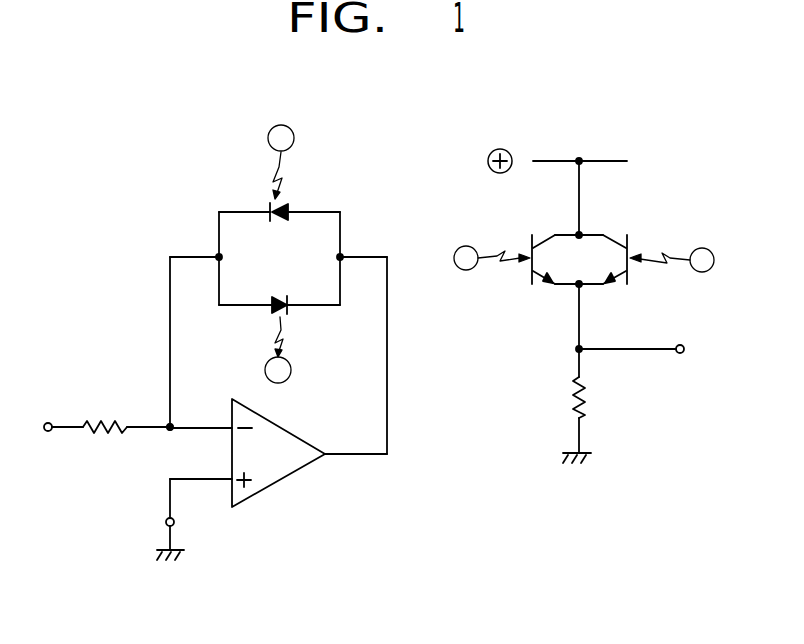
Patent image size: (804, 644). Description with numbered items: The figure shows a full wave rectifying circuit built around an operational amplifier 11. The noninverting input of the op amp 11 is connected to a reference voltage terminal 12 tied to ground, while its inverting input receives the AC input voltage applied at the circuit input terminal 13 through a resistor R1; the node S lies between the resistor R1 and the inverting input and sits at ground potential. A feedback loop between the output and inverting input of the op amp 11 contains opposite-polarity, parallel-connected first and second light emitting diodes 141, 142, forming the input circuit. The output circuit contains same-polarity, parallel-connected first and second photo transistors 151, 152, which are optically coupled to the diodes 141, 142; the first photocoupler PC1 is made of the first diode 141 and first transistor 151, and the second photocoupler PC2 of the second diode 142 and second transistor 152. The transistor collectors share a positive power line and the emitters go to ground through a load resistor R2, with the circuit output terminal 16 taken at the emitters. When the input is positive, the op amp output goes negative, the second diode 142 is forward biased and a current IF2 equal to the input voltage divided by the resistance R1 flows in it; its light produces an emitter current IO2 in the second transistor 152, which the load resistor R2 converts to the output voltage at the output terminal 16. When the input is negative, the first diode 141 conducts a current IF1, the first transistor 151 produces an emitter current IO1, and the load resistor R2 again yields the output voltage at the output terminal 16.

The operational amplifier 11 is at (293, 444).
The reference voltage terminal 12 is at (165, 522).
The circuit input terminal 13 is at (48, 422).
The first photoconverting element 141 is at (277, 221).
The second photoconverting element 142 is at (281, 297).
The first photo transistor 151 is at (624, 235).
The second photo transistor 152 is at (522, 235).
The circuit output terminal 16 is at (680, 345).
The resistor R1 is at (105, 420).
The load resistor R2 is at (572, 396).
The node S is at (168, 425).
The first photocoupler PC1 is at (277, 149).
The second photocoupler PC2 is at (299, 350).
The forward current of first LED IF1 is at (300, 199).
The forward current of second LED IF2 is at (252, 321).
The emitter current of first photo transistor IO1 is at (587, 300).
The emitter current of second photo transistor IO2 is at (565, 296).